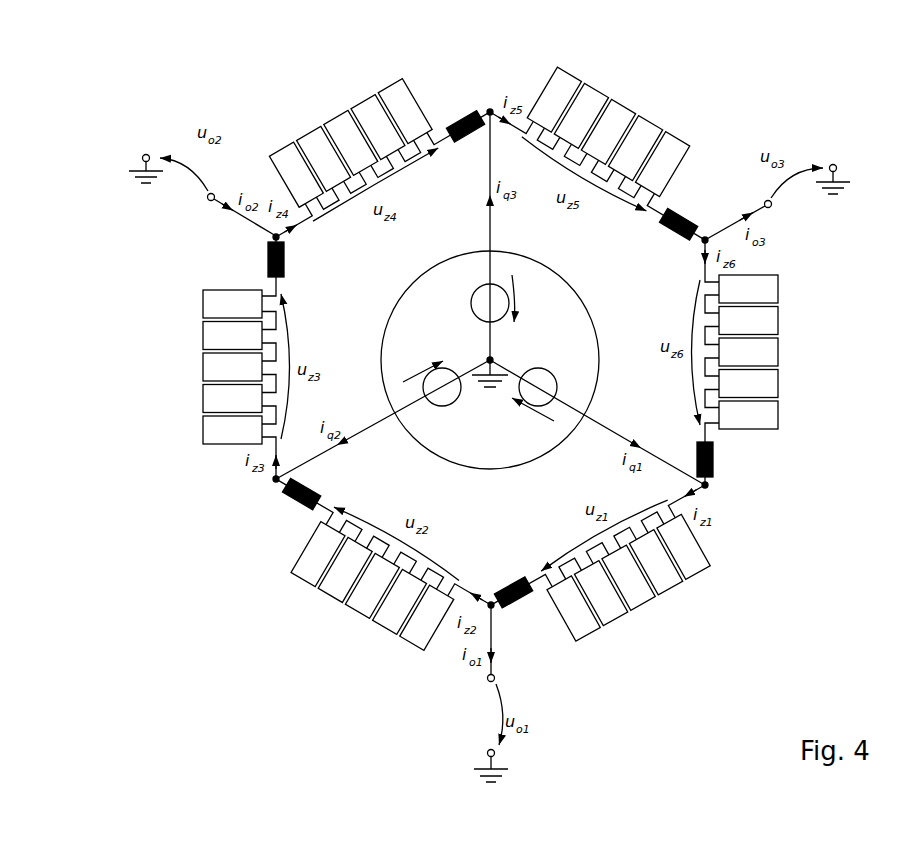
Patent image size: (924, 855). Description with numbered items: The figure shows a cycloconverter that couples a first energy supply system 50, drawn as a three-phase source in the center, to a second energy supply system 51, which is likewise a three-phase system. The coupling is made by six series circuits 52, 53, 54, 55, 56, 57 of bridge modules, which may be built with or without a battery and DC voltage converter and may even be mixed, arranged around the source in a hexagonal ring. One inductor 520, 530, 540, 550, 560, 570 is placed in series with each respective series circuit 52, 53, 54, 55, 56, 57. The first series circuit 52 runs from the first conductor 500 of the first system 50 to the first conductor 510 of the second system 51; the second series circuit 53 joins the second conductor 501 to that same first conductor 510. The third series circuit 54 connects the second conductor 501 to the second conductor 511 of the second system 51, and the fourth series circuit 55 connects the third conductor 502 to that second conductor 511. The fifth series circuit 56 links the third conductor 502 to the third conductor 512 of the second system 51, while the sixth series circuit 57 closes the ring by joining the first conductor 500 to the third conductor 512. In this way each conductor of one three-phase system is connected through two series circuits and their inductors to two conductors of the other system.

The first energy supply system 50 is at (581, 296).
The second energy supply system 51 is at (796, 229).
The first series circuit 52 is at (658, 103).
The second series circuit 53 is at (790, 349).
The third series circuit 54 is at (648, 613).
The fourth series circuit 55 is at (359, 627).
The fifth series circuit 56 is at (181, 371).
The sixth series circuit 57 is at (330, 107).
The first conductor of the first power supply system 500 is at (490, 112).
The second conductor of the first power supply system 501 is at (705, 485).
The third conductor of the first power supply system 502 is at (276, 479).
The first conductor of the second power supply system 510 is at (773, 208).
The second conductor of the second power supply system 511 is at (493, 652).
The third conductor of the second power supply system 512 is at (235, 212).
The inductor 520 is at (686, 218).
The inductor 530 is at (714, 460).
The inductor 540 is at (518, 602).
The inductor 550 is at (290, 498).
The inductor 560 is at (268, 262).
The inductor 570 is at (458, 120).